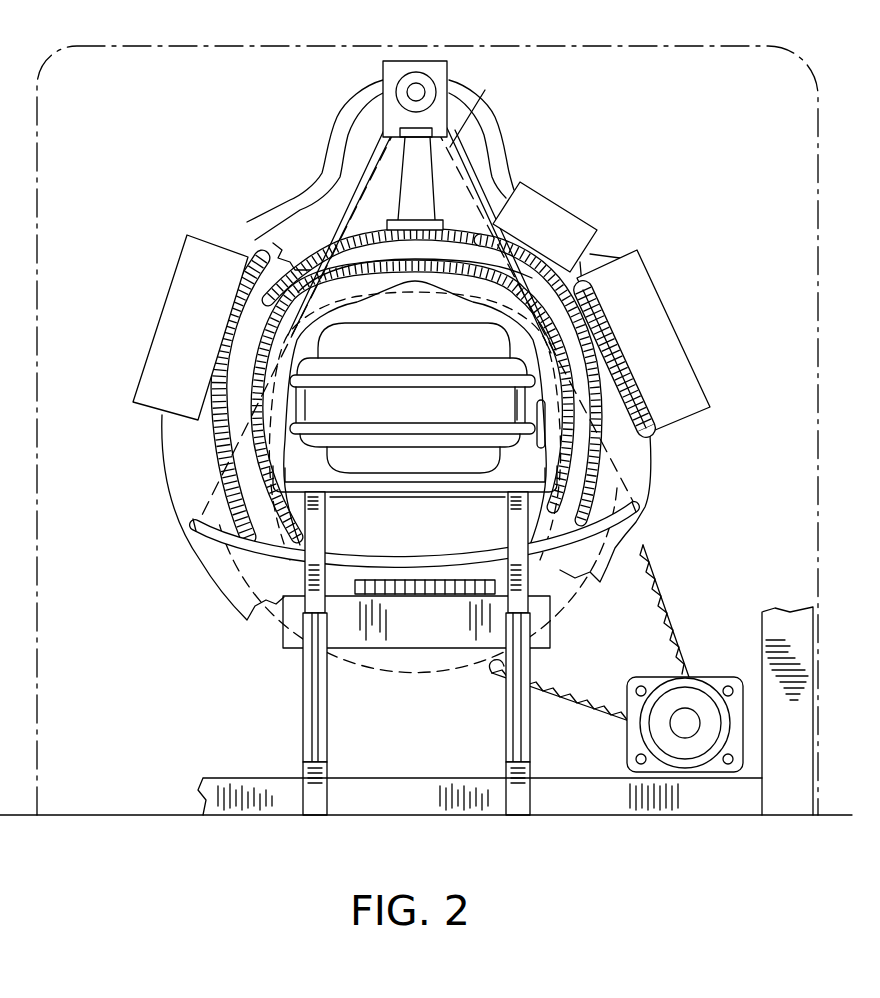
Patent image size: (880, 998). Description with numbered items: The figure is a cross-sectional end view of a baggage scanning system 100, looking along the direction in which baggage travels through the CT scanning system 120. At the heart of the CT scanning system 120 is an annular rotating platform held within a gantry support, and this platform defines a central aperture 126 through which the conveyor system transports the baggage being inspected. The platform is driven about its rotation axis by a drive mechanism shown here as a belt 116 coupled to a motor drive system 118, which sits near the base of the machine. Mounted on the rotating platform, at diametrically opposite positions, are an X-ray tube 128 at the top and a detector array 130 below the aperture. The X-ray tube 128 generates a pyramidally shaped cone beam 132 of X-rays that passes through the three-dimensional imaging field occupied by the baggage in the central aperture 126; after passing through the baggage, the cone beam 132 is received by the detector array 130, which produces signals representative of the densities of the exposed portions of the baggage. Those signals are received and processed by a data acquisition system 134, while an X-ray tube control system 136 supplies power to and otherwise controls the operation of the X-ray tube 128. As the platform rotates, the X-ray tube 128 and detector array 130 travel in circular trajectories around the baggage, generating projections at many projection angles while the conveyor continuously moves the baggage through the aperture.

The baggage scanning system 100 is at (182, 870).
The belt 116 is at (668, 580).
The motor drive system 118 is at (688, 720).
The CT scanning system 120 is at (126, 40).
The central aperture 126 is at (445, 539).
The X-ray tube 128 is at (395, 70).
The detector array 130 is at (215, 516).
The cone beam 132 is at (612, 478).
The data acquisition system 134 is at (293, 618).
The X-ray tube control system 136 is at (172, 291).